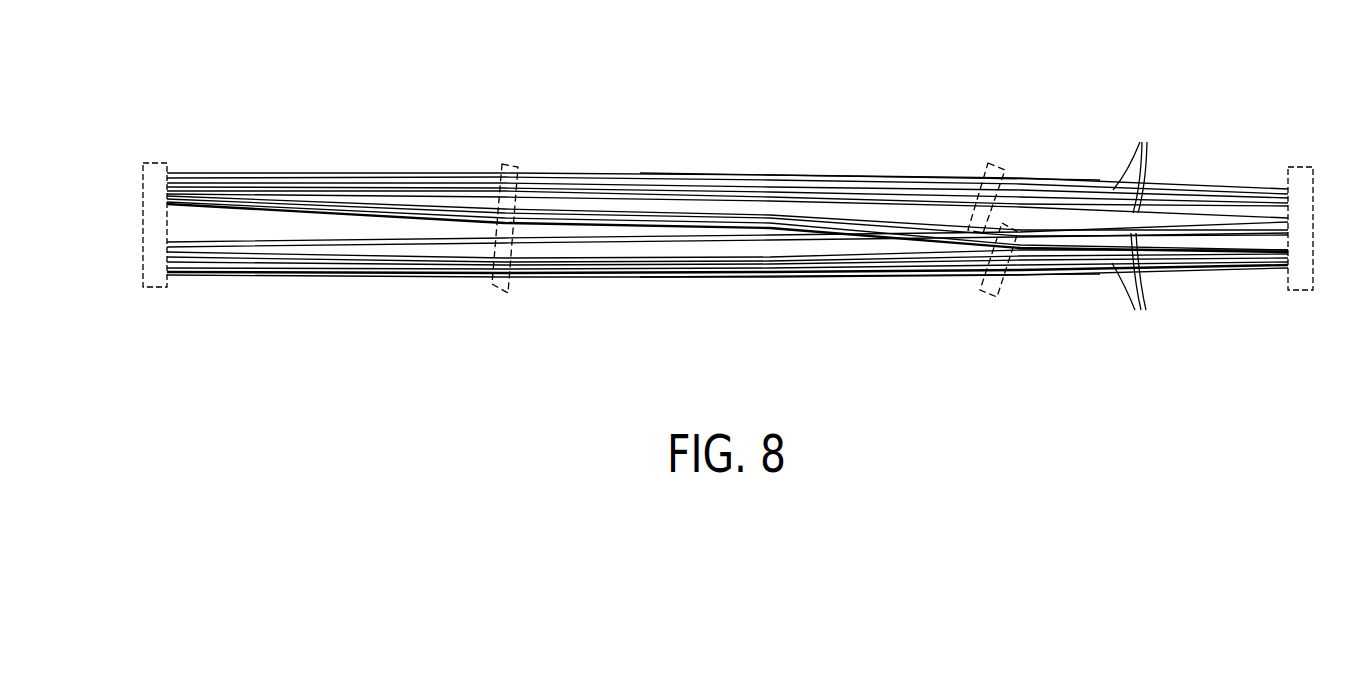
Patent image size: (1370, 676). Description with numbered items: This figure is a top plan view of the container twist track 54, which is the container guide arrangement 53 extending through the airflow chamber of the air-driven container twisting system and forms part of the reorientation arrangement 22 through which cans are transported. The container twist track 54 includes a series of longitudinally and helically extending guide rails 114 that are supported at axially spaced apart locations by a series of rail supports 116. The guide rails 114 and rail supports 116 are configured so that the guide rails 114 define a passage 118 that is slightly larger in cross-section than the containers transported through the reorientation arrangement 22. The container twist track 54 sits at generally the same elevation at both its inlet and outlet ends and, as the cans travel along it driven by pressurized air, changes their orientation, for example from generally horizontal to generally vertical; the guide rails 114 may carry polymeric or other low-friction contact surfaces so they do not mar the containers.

The reorientation arrangement 22 is at (862, 110).
The container guide arrangement 53 is at (823, 306).
The container twist track 54 is at (931, 143).
The guide rails 114 is at (1135, 225).
The rail supports 116 is at (153, 163).
The passage 118 is at (1272, 242).